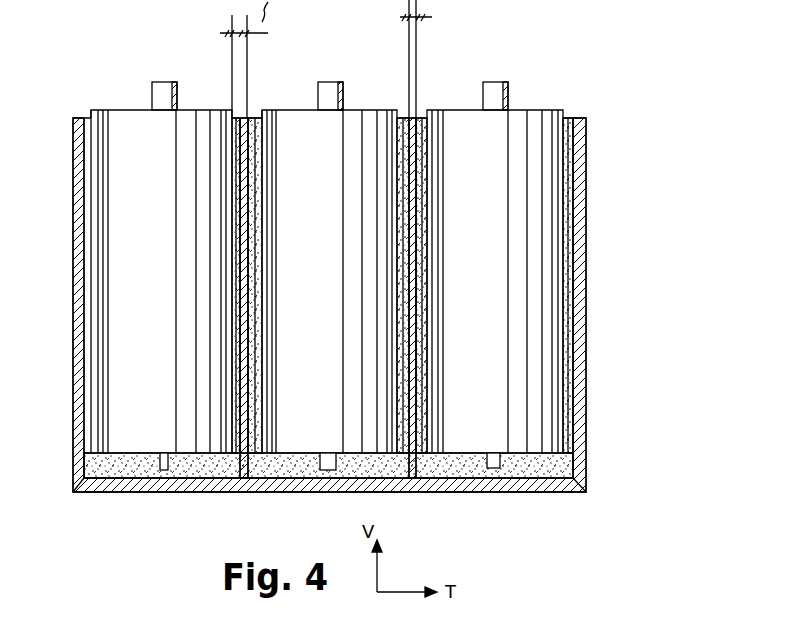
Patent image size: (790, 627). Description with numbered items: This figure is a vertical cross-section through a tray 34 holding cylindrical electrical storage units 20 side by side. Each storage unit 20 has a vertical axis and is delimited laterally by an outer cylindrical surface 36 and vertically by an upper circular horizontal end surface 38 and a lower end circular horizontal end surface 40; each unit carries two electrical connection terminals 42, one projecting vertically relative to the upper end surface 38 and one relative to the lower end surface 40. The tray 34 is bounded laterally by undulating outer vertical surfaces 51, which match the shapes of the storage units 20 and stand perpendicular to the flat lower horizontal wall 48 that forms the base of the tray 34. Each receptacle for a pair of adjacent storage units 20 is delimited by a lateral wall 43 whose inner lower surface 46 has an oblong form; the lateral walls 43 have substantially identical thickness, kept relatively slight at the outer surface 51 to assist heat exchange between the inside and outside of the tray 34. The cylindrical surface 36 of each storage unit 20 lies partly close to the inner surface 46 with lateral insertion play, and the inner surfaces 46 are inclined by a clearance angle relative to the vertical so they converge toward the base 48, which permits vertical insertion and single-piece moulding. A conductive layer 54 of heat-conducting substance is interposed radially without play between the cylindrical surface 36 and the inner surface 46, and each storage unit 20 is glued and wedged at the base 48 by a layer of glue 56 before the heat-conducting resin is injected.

The storage unit 20 is at (188, 127).
The tray 34 is at (572, 35).
The outer cylindrical surface 36 is at (233, 163).
The upper circular horizontal end surface 38 is at (140, 110).
The lower end circular horizontal end surface 40 is at (143, 488).
The electrical connection terminal 42 is at (173, 83).
The lateral wall 43 is at (247, 118).
The lower surface 46 is at (80, 143).
The flat lower horizontal wall 48 is at (277, 496).
The undulating outer vertical surface 51 is at (72, 382).
The conductive layer 54 is at (432, 157).
The layer of glue 56 is at (212, 487).